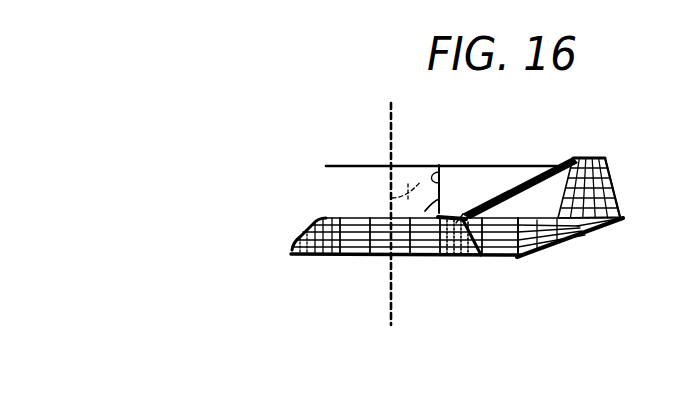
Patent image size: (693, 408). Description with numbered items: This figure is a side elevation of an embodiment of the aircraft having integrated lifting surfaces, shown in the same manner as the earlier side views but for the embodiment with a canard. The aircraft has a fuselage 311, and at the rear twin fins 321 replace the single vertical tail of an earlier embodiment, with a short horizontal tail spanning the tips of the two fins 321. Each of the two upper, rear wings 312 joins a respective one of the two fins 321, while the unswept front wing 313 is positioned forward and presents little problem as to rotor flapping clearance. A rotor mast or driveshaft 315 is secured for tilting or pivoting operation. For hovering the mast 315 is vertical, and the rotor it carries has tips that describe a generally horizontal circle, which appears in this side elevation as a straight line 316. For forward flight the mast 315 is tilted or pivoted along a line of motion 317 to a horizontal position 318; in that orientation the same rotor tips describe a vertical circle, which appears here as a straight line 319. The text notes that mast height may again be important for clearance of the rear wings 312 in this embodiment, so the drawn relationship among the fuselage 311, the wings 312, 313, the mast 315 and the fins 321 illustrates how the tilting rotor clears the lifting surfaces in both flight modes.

The fuselage 311 is at (419, 257).
The upper rear wing 312 is at (564, 158).
The front wing 313 is at (482, 259).
The mast or driveshaft 315 is at (439, 165).
The rotor tip circle (hovering) 316 is at (348, 167).
The line of motion 317 is at (392, 198).
The horizontal position of mast 318 is at (440, 210).
The rotor tip circle (forward flight) 319 is at (391, 145).
The fin 321 is at (618, 203).